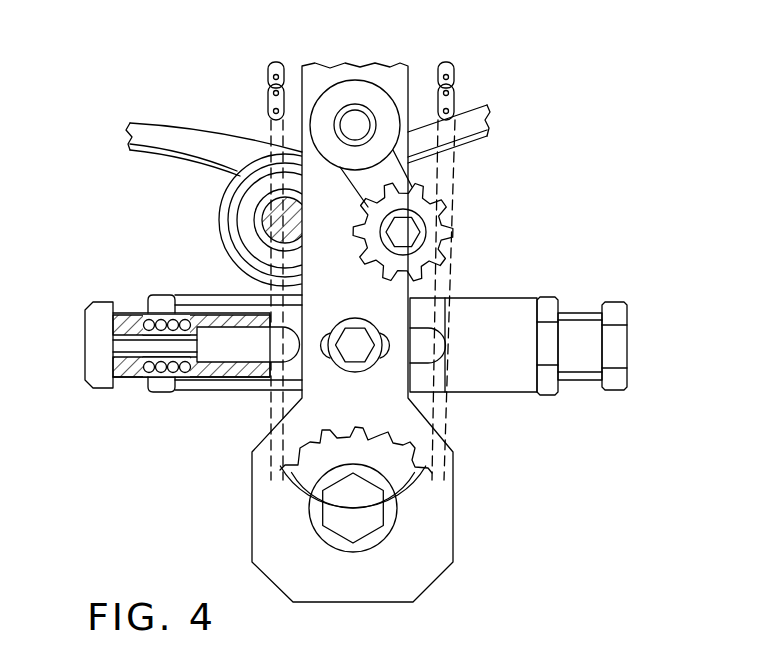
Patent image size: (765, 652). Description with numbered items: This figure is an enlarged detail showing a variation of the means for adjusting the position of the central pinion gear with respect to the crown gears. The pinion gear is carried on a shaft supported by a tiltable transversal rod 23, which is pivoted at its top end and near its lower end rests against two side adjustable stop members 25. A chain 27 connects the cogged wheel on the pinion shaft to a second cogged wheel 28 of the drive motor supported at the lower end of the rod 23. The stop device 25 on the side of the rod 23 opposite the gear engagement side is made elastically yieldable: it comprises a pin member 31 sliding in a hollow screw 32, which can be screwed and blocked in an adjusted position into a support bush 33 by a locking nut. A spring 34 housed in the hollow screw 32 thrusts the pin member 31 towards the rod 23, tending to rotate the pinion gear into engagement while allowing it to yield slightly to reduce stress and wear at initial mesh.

The transversal rod 23 is at (383, 77).
The adjustable stop member 25 is at (173, 282).
The chain 27 is at (447, 173).
The second cogged wheel 28 is at (407, 505).
The pin member 31 is at (230, 350).
The hollow screw 32 is at (127, 310).
The support bush 33 is at (198, 297).
The spring 34 is at (152, 363).